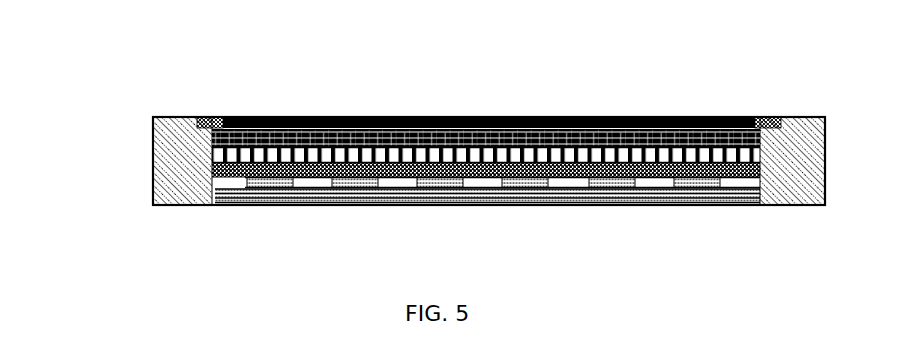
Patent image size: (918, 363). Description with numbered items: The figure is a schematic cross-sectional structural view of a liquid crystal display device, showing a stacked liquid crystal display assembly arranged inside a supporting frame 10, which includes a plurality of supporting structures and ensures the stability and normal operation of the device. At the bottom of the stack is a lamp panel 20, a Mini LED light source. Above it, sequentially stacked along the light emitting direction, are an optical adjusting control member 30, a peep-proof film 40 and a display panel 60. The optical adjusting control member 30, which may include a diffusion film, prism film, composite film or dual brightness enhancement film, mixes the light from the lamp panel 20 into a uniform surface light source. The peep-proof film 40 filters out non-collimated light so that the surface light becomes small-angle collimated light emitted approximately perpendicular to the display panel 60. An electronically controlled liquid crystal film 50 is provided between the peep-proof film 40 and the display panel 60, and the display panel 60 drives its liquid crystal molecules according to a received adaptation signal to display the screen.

The supporting frame 10 is at (166, 186).
The lamp panel 20 is at (290, 196).
The optical adjusting control member 30 is at (214, 171).
The peep-proof film 40 is at (214, 153).
The electronically controlled liquid crystal film 50 is at (214, 131).
The display panel 60 is at (290, 116).